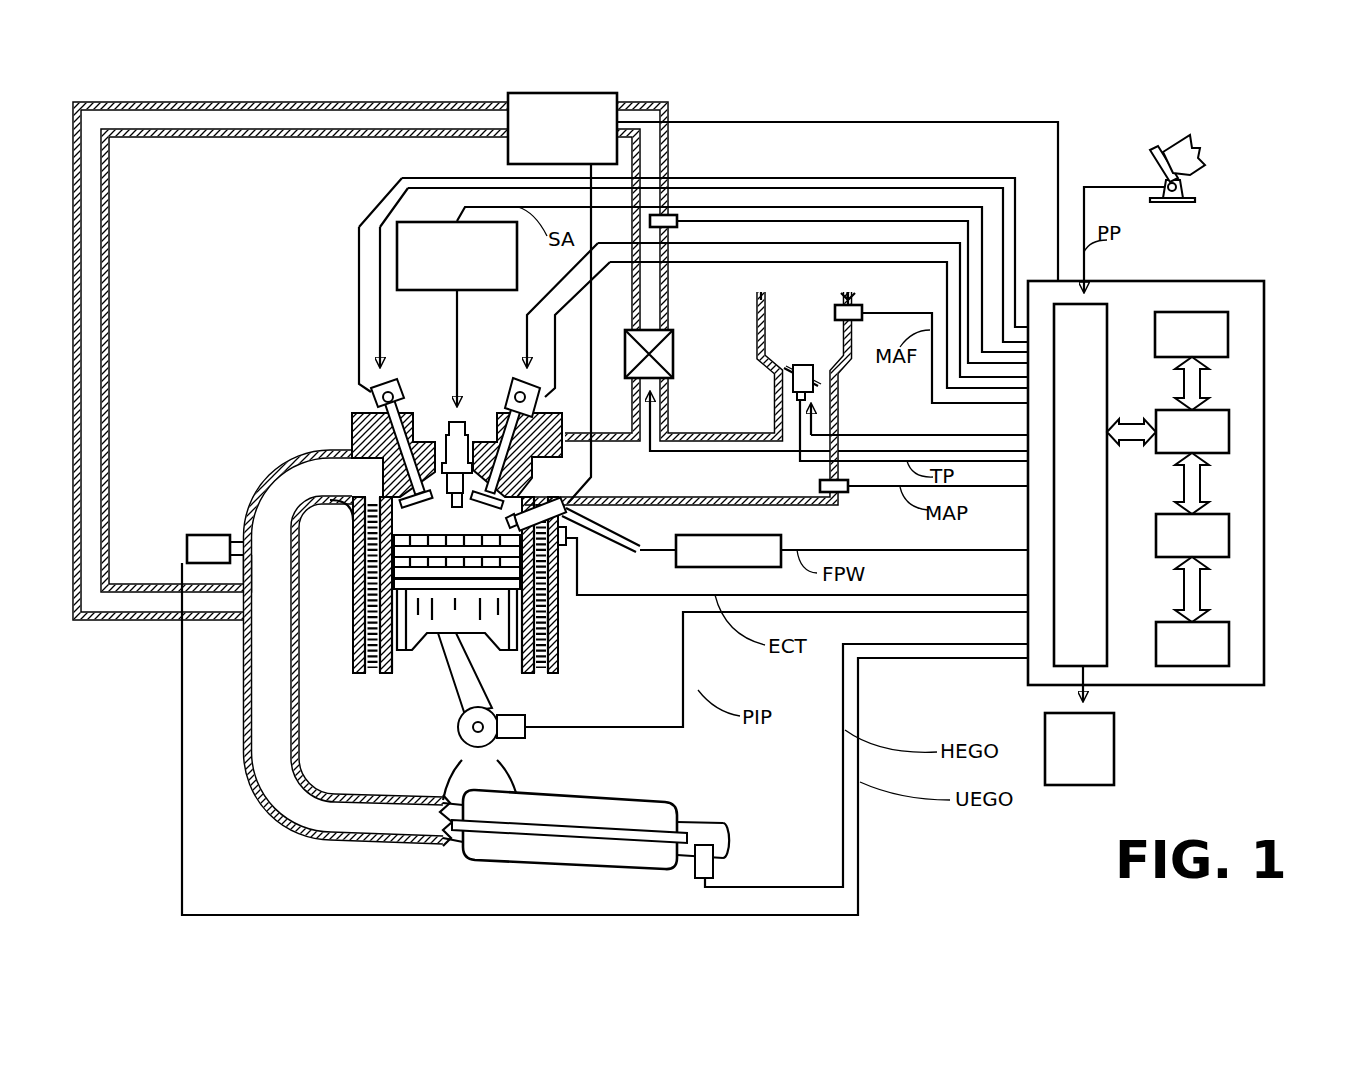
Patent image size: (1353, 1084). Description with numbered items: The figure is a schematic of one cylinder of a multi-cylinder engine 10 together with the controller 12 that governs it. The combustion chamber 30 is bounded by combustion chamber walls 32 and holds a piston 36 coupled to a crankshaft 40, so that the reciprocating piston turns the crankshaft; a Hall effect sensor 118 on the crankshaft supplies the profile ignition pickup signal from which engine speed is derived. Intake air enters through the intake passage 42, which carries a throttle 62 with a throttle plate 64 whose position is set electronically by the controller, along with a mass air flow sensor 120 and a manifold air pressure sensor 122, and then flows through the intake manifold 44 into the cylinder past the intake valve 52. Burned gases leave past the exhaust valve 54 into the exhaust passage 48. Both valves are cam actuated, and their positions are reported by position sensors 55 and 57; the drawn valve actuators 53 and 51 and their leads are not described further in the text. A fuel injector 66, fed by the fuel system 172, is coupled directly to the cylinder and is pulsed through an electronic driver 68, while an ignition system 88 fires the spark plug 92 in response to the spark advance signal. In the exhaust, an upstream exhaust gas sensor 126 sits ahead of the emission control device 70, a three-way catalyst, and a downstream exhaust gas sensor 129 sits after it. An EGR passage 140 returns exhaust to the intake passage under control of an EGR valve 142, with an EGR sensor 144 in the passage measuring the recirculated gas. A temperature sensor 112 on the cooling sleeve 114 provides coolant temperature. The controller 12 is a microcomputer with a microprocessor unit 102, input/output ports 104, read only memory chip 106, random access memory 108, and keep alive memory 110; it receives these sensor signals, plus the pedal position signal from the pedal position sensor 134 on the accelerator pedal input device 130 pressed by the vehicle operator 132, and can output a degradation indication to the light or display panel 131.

The engine 10 is at (390, 406).
The controller 12 is at (1240, 281).
The combustion chamber 30 is at (355, 632).
The combustion chamber walls 32 is at (397, 657).
The piston 36 is at (438, 618).
The crankshaft 40 is at (460, 752).
The intake passage 42 is at (816, 339).
The intake manifold 44 is at (748, 482).
The exhaust passage 48 is at (330, 486).
The intake cam actuator line 51 is at (513, 382).
The intake valve 52 is at (500, 480).
The exhaust valve actuator 53 is at (400, 382).
The exhaust valve 54 is at (408, 487).
The position sensor 55 is at (527, 398).
The position sensor 57 is at (372, 400).
The throttle 62 is at (814, 380).
The throttle plate 64 is at (791, 378).
The fuel injector 66 is at (575, 512).
The electronic driver 68 is at (690, 568).
The emission control device 70 is at (643, 795).
The ignition system 88 is at (410, 221).
The spark plug 92 is at (462, 410).
The microprocessor unit 102 is at (1229, 430).
The input/output ports 104 is at (1107, 322).
The read only memory chip 106 is at (1228, 330).
The random access memory 108 is at (1229, 535).
The keep alive memory 110 is at (1229, 640).
The temperature sensor 112 is at (566, 547).
The cooling sleeve 114 is at (548, 627).
The Hall effect sensor 118 is at (515, 740).
The mass air flow sensor 120 is at (858, 303).
The manifold air pressure sensor 122 is at (845, 492).
The upstream exhaust gas sensor 126 is at (187, 540).
The downstream exhaust gas sensor 129 is at (713, 860).
The input device 130 is at (1155, 155).
The light or display panel 131 is at (1079, 725).
The vehicle operator 132 is at (1205, 148).
The pedal position sensor 134 is at (1177, 188).
The EGR passage 140 is at (368, 103).
The EGR valve 142 is at (700, 340).
The EGR sensor 144 is at (675, 227).
The fuel system 172 is at (567, 96).